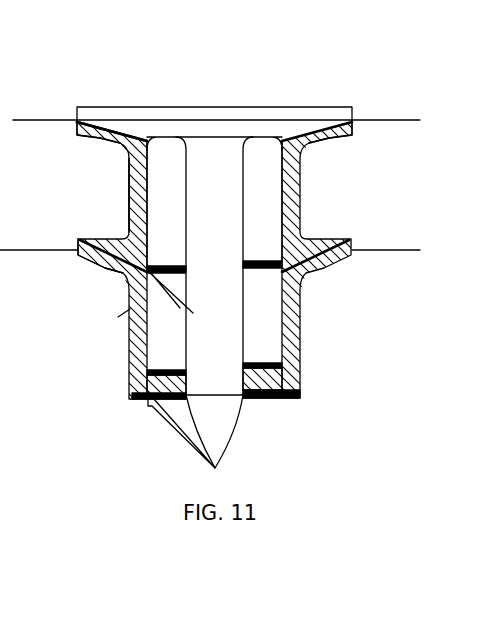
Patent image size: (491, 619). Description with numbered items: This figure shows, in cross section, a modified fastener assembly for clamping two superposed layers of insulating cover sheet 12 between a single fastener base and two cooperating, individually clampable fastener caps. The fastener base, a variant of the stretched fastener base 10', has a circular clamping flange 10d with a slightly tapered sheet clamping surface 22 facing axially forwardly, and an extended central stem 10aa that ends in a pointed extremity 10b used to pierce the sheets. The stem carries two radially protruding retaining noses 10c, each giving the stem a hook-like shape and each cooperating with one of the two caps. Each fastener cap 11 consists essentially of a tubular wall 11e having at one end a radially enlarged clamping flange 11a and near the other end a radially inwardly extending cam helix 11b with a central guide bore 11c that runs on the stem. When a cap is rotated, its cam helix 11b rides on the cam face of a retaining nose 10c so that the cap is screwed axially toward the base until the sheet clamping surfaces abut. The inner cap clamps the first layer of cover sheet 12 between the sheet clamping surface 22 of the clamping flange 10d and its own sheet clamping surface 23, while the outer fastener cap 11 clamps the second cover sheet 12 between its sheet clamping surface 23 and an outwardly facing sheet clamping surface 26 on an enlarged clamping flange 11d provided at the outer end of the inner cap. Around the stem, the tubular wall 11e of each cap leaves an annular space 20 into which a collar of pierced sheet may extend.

The stretched fastener base 10' is at (6, 80).
The extended central stem 10aa is at (134, 199).
The pointed extremity 10b is at (220, 418).
The retaining nose 10c is at (153, 389).
The clamping flange 10d is at (268, 107).
The fastener cap 11 is at (309, 350).
The clamping flange 11a is at (313, 141).
The cam helix 11b is at (255, 378).
The central guide bore 11c is at (185, 253).
The enlarged clamping flange 11d is at (82, 270).
The tubular wall 11e is at (130, 351).
The cover sheet 12 is at (18, 122).
The annular space 20 is at (263, 217).
The sheet clamping surface 22 is at (222, 127).
The sheet clamping surface 23 is at (110, 138).
The outwardly facing sheet clamping surface 26 is at (118, 267).